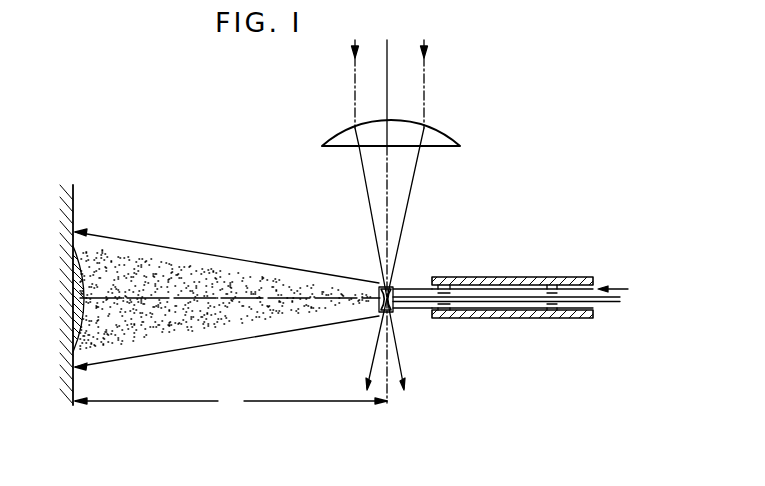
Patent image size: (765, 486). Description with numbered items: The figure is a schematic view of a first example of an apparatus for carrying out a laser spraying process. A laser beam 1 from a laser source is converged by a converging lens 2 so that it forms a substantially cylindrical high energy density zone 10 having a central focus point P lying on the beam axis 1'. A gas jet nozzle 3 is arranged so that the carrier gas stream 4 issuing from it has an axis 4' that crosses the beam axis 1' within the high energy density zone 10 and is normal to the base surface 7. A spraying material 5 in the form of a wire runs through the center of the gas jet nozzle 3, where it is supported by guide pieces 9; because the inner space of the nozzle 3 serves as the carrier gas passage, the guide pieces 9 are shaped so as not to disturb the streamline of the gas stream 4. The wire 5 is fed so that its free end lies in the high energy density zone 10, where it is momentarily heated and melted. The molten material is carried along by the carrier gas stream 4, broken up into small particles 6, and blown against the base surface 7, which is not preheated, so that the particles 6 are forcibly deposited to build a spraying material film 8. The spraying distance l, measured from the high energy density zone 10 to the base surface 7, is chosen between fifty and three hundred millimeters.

The laser beam 1 is at (408, 215).
The converging lens 2 is at (441, 136).
The beam axis 1' is at (365, 276).
The high energy density zone 10 is at (397, 284).
The spraying material 5 is at (422, 290).
The guide pieces 9 is at (548, 285).
The gas jet nozzle 3 is at (562, 278).
The carrier gas stream 4 is at (227, 248).
The axis of the carrier gas stream 4' is at (227, 342).
The small particles 6 is at (268, 276).
The base surface 7 is at (75, 210).
The spraying material film 8 is at (85, 312).
The central focus point P is at (393, 303).
The spraying distance l is at (231, 400).